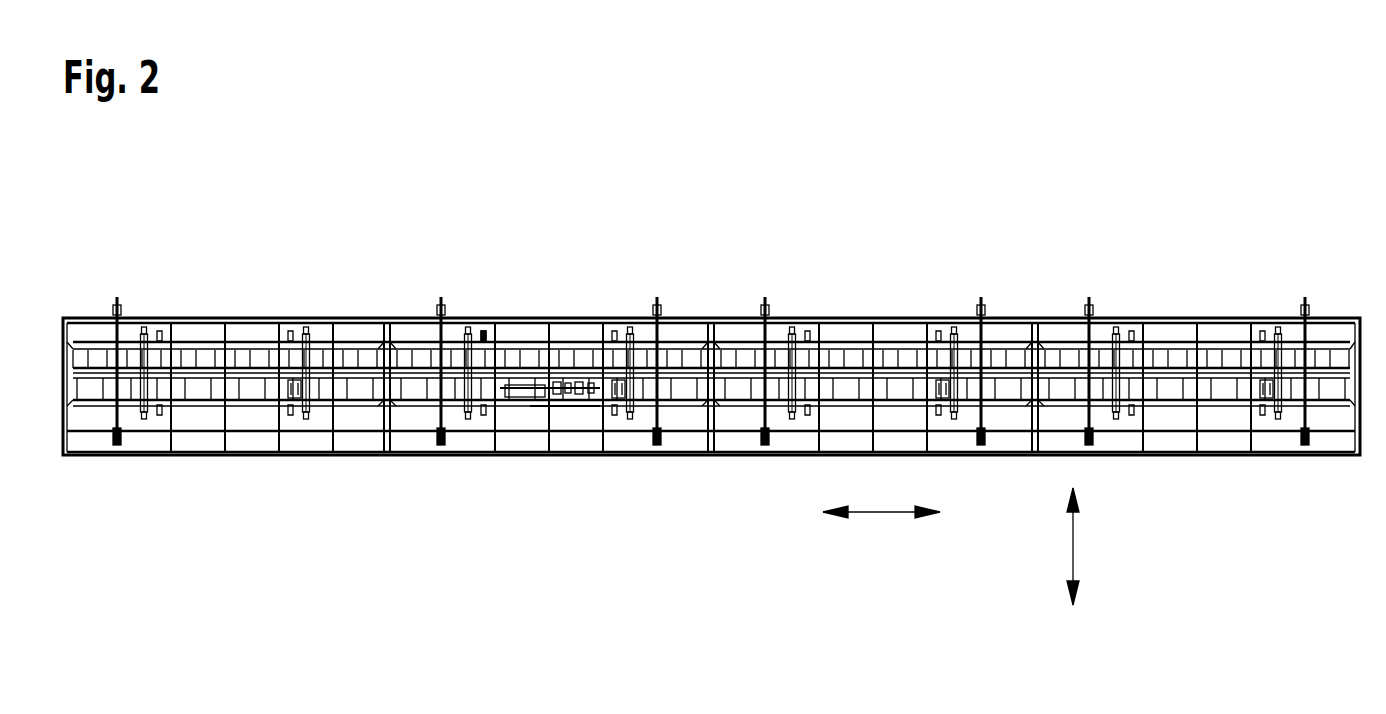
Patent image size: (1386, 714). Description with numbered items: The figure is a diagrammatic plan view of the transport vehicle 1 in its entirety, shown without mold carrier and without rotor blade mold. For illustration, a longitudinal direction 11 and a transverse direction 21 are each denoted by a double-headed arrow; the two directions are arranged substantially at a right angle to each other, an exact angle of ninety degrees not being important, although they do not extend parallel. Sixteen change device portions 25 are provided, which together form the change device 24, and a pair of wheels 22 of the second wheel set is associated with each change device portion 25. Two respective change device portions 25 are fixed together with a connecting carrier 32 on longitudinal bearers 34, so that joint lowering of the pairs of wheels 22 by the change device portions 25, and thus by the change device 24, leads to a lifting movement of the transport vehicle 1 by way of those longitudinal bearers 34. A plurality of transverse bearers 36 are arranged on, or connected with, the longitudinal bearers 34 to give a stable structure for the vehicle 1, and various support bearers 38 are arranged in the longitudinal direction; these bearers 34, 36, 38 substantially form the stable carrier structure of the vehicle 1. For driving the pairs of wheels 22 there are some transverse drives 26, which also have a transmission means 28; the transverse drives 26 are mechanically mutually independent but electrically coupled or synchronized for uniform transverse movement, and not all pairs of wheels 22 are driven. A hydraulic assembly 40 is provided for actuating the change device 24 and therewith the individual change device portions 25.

The transport vehicle 1 is at (498, 547).
The longitudinal direction 11 is at (885, 512).
The transverse direction 21 is at (1075, 547).
The pair of wheels 22 is at (140, 318).
The change device 24 is at (748, 381).
The change device portion 25 is at (150, 332).
The transverse drive 26 is at (495, 337).
The transmission means 28 is at (483, 333).
The connecting carrier 32 is at (325, 338).
The longitudinal bearer 34 is at (683, 345).
The transverse bearer 36 is at (875, 333).
The support bearer 38 is at (635, 318).
The hydraulic assembly 40 is at (577, 400).